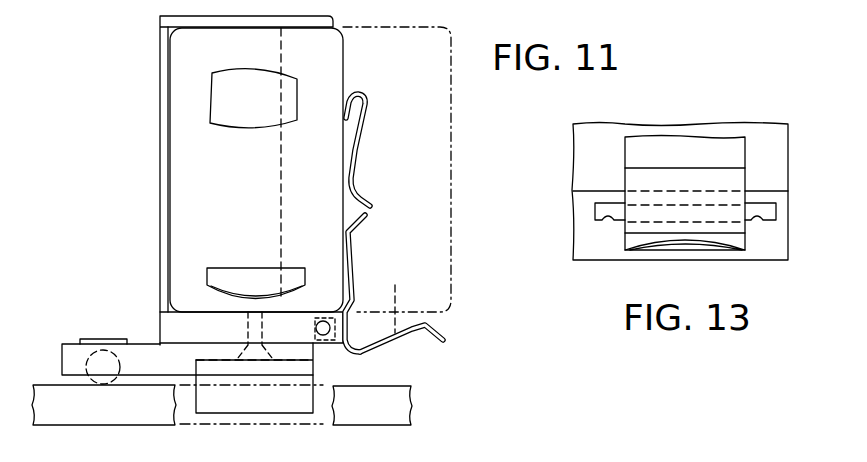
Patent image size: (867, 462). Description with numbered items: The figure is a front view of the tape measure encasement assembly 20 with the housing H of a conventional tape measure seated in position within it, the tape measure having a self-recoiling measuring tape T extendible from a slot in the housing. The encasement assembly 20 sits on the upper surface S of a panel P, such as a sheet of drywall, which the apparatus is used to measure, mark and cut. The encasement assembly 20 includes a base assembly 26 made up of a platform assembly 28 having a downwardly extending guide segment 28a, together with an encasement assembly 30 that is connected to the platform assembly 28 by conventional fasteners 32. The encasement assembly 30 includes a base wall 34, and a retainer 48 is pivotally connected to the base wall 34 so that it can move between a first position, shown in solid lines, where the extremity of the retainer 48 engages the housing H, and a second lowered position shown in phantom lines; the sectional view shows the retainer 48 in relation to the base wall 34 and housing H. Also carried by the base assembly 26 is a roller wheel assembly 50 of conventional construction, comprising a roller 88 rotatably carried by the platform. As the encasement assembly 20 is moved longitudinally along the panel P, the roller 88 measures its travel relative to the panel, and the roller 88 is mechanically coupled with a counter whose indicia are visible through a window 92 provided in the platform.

In FIG. 11, the tape measure encasement assembly 20 is at (158, 67).
In FIG. 11, the encasement assembly 30 is at (165, 118).
In FIG. 11, the housing H is at (453, 101).
In FIG. 13, the housing H is at (763, 145).
In FIG. 11, the fasteners 32 is at (251, 268).
In FIG. 11, the measuring tape T is at (287, 295).
In FIG. 11, the base wall 34 is at (188, 325).
In FIG. 13, the base wall 34 is at (603, 235).
In FIG. 11, the retainer 48 is at (356, 262).
In FIG. 13, the retainer 48 is at (683, 150).
In FIG. 11, the base assembly 26 is at (147, 340).
In FIG. 11, the platform assembly 28 is at (172, 362).
In FIG. 11, the guide segment 28a is at (240, 403).
In FIG. 11, the window 92 is at (93, 339).
In FIG. 11, the roller wheel assembly 50 is at (84, 341).
In FIG. 11, the roller 88 is at (100, 383).
In FIG. 11, the panel P is at (383, 401).
In FIG. 11, the upper surface S is at (365, 385).